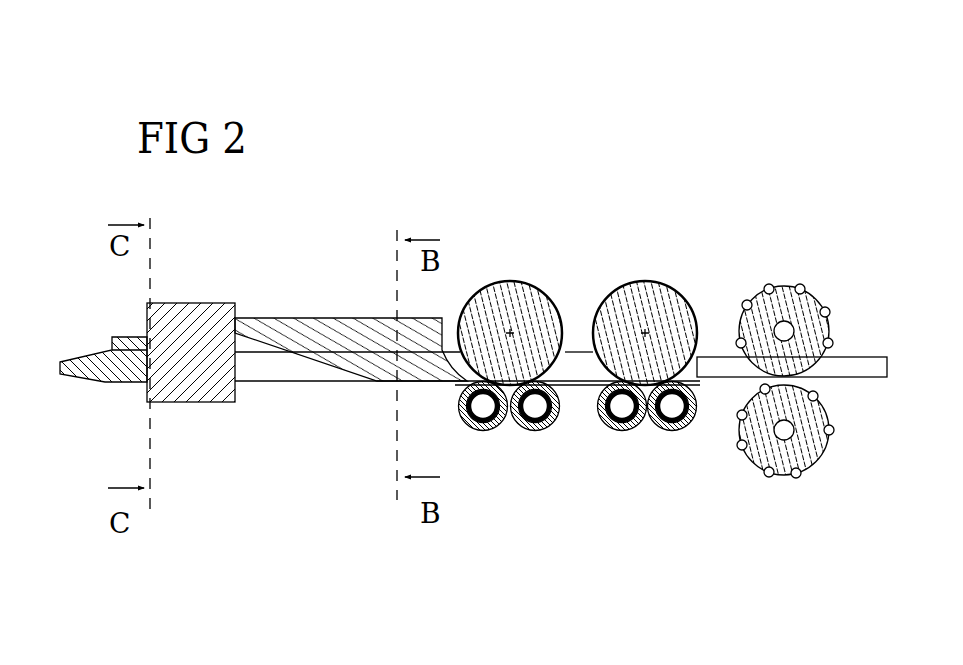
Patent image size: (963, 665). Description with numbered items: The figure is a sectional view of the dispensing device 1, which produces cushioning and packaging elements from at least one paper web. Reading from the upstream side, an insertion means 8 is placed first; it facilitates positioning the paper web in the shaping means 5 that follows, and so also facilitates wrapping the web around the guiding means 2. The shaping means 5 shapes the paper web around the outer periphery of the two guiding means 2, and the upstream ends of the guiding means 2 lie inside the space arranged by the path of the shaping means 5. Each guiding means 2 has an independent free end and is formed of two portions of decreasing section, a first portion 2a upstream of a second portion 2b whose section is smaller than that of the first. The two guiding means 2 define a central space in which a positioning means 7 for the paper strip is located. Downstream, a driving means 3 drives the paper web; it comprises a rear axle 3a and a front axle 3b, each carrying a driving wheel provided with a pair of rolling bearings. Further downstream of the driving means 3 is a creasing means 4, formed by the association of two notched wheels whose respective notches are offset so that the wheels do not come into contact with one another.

The dispensing device 1 is at (663, 99).
The guiding means 2 is at (535, 521).
The first portion 2a is at (580, 387).
The second portion 2b is at (717, 380).
The driving means 3 is at (497, 153).
The rear axle 3a is at (495, 266).
The front axle 3b is at (617, 266).
The creasing means 4 is at (789, 275).
The shaping means 5 is at (208, 303).
The positioning means 7 is at (340, 318).
The insertion means 8 is at (95, 343).